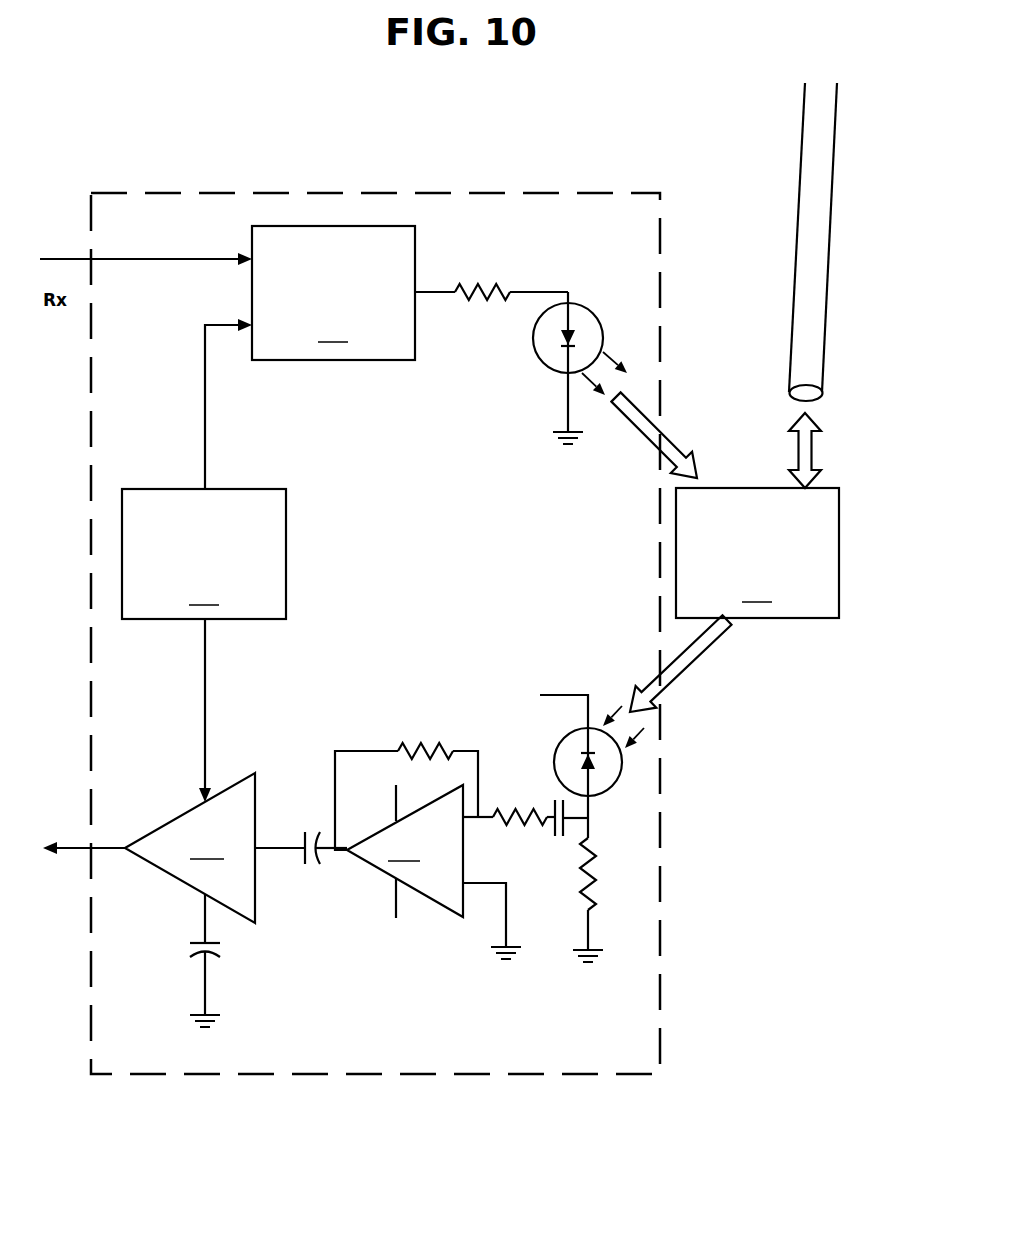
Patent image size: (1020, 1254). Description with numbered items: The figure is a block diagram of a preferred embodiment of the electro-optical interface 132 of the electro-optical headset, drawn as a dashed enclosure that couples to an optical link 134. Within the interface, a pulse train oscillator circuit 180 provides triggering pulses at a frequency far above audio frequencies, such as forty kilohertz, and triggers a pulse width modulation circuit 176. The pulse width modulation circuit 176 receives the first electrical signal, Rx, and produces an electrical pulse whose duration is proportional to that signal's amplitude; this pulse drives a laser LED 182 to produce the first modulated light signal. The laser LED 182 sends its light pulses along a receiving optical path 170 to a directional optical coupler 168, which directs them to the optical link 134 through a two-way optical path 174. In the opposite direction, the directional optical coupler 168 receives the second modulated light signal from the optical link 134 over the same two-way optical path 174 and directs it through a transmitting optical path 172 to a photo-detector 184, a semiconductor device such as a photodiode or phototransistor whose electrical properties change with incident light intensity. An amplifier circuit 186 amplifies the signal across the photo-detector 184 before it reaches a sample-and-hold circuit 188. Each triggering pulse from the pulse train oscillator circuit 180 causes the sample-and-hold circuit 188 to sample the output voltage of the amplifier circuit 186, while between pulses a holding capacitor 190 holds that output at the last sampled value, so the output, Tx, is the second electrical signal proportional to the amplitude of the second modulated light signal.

The electro-optical interface 132 is at (415, 192).
The optical link 134 is at (797, 213).
The directional optical coupler 168 is at (757, 553).
The receiving optical path 170 is at (675, 442).
The transmitting optical path 172 is at (692, 668).
The two-way optical path 174 is at (815, 440).
The pulse width modulation circuit 176 is at (333, 293).
The pulse train oscillator circuit 180 is at (204, 554).
The laser LED 182 is at (536, 358).
The photo-detector 184 is at (617, 782).
The amplifier circuit 186 is at (428, 851).
The sample-and-hold circuit 188 is at (149, 848).
The holding capacitor 190 is at (200, 940).